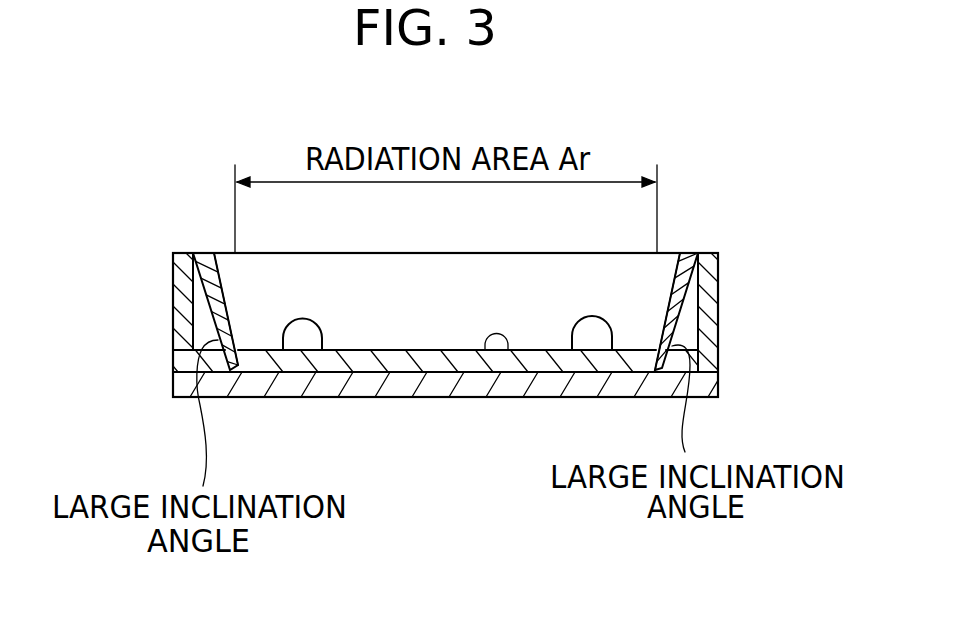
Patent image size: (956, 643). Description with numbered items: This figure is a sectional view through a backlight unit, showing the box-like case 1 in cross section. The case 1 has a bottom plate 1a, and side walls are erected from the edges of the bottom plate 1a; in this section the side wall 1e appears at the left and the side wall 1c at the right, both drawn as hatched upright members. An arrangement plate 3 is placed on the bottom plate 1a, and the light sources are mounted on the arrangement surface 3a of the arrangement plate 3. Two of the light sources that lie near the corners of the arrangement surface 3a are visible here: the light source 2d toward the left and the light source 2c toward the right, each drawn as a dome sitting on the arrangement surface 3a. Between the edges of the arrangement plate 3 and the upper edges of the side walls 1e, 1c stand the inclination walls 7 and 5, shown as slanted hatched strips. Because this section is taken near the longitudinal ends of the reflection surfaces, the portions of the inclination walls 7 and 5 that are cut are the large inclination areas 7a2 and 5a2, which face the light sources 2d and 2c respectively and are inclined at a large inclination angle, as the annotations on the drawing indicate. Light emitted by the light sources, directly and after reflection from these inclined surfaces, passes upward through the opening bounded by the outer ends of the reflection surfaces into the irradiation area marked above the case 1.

The case 1 is at (170, 312).
The bottom plate 1a is at (407, 385).
The side wall 1c is at (708, 297).
The side wall 1e is at (173, 263).
The light source 2c is at (587, 330).
The light source 2d is at (305, 330).
The arrangement plate 3 is at (306, 358).
The arrangement surface 3a is at (512, 355).
The inclination wall 5 is at (692, 253).
The large inclination area 5a2 is at (665, 286).
The inclination wall 7 is at (199, 253).
The large inclination area 7a2 is at (222, 283).